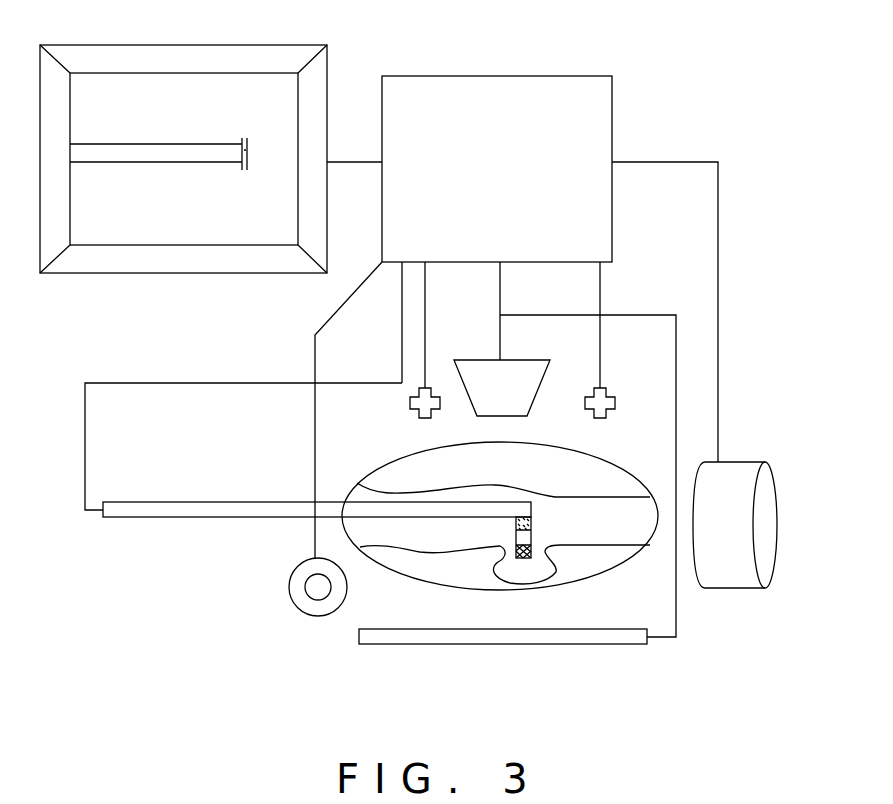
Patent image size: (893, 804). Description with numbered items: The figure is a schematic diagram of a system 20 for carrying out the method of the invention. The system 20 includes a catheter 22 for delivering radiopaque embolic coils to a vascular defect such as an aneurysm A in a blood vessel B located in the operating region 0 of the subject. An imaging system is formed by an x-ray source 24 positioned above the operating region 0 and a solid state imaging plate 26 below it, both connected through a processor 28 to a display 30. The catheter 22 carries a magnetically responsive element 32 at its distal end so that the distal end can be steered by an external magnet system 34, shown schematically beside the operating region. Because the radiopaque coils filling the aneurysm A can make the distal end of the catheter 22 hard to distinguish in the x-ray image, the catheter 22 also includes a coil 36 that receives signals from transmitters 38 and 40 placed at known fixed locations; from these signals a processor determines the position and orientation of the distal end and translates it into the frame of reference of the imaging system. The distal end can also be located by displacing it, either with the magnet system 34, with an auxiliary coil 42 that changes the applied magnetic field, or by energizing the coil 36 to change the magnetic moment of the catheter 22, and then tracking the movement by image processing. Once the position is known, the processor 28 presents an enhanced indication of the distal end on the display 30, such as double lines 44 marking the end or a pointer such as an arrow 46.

The system 20 is at (487, 61).
The catheter 22 is at (155, 163).
The x-ray source 24 is at (525, 357).
The solid state imaging plate 26 is at (512, 648).
The processor 28 is at (614, 122).
The display 30 is at (327, 72).
The magnetically responsive element 32 is at (533, 555).
The external magnet system 34 is at (722, 563).
The coil 36 is at (516, 524).
The transmitter 38 is at (424, 408).
The transmitter 40 is at (620, 410).
The auxiliary coil 42 is at (292, 601).
The double lines 44 is at (252, 160).
The arrow 46 is at (250, 146).
The operating region 0 is at (555, 449).
The aneurysm A is at (557, 566).
The blood vessel B is at (578, 515).